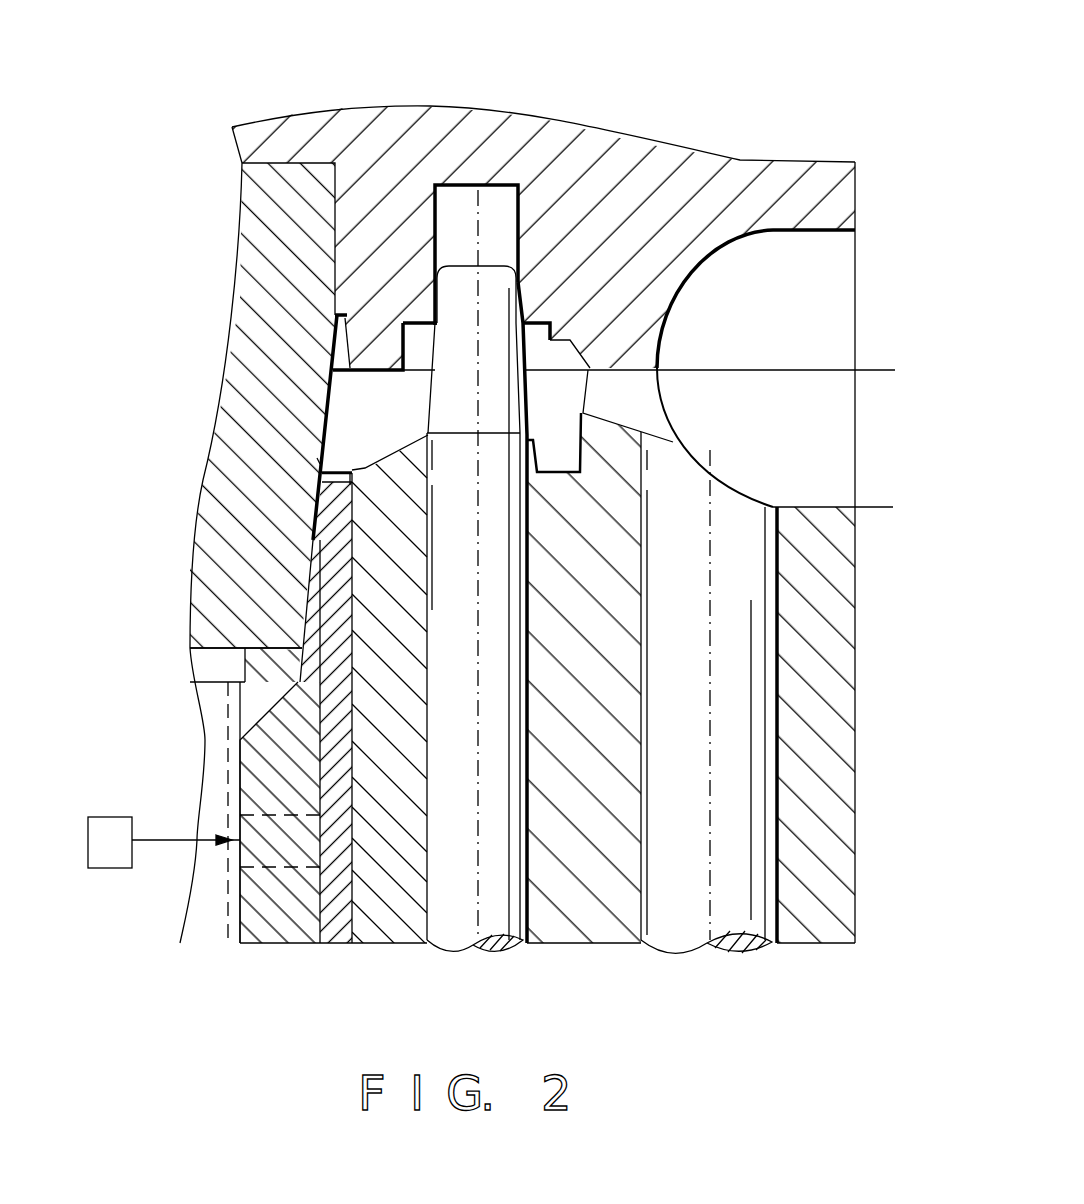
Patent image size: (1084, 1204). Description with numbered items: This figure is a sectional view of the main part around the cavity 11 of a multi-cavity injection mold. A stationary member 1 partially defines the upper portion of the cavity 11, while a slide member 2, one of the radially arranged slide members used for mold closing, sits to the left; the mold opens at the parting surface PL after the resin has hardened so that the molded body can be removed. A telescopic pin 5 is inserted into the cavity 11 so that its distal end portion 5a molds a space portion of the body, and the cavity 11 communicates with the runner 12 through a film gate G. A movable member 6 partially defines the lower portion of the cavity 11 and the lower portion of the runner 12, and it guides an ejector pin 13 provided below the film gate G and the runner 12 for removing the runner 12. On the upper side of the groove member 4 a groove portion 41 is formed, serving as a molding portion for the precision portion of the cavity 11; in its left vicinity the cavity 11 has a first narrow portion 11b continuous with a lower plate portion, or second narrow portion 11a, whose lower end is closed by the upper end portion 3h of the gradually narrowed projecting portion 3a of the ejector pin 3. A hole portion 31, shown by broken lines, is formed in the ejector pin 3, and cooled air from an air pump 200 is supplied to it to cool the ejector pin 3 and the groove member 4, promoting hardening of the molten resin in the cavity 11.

The stationary member 1 is at (585, 188).
The slide member 2 is at (278, 260).
The ejector pin 3 is at (282, 797).
The upper end portion of the projecting portion 3h is at (313, 540).
The projecting portion 3a is at (310, 661).
The groove member 4 is at (337, 790).
The groove portion 41 is at (320, 420).
The telescopic pin 5 is at (477, 845).
The distal end portion 5a is at (477, 310).
The movable member 6 is at (593, 825).
The cavity 11 is at (372, 380).
The plate portion (second narrow portion) 11a is at (320, 473).
The first narrow portion 11b is at (317, 460).
The runner 12 is at (740, 293).
The ejector pin 13 is at (722, 808).
The hole portion 31 is at (247, 853).
The air pump 200 is at (118, 817).
The film gate G is at (627, 388).
The parting surface PL is at (833, 368).